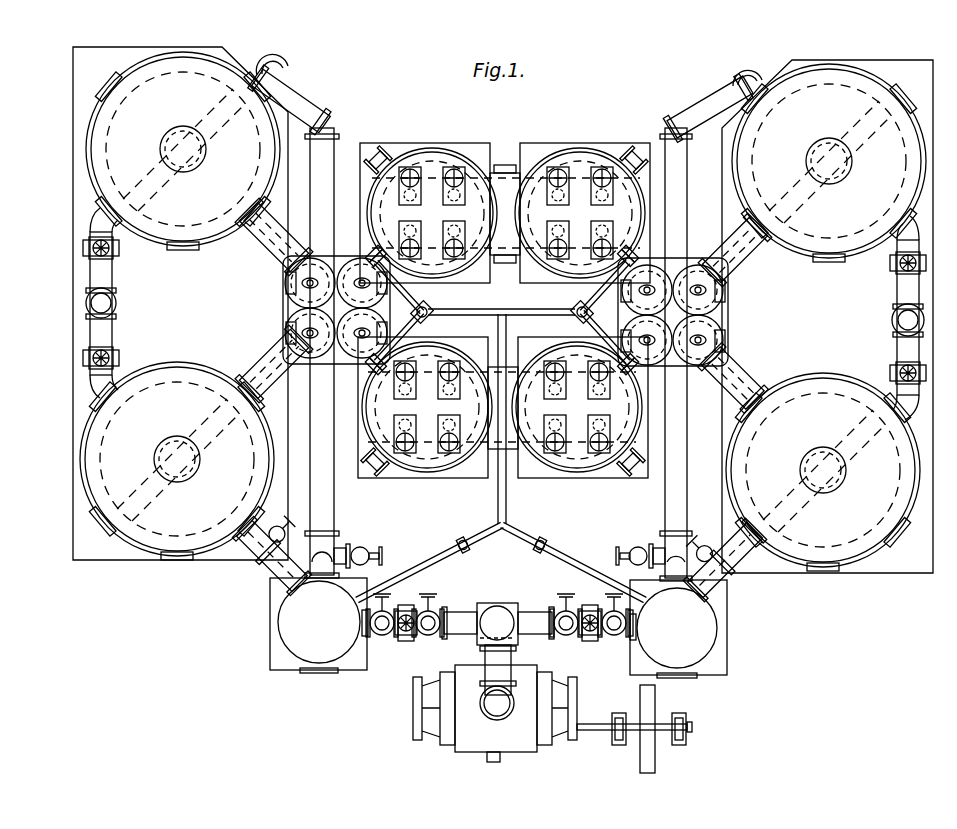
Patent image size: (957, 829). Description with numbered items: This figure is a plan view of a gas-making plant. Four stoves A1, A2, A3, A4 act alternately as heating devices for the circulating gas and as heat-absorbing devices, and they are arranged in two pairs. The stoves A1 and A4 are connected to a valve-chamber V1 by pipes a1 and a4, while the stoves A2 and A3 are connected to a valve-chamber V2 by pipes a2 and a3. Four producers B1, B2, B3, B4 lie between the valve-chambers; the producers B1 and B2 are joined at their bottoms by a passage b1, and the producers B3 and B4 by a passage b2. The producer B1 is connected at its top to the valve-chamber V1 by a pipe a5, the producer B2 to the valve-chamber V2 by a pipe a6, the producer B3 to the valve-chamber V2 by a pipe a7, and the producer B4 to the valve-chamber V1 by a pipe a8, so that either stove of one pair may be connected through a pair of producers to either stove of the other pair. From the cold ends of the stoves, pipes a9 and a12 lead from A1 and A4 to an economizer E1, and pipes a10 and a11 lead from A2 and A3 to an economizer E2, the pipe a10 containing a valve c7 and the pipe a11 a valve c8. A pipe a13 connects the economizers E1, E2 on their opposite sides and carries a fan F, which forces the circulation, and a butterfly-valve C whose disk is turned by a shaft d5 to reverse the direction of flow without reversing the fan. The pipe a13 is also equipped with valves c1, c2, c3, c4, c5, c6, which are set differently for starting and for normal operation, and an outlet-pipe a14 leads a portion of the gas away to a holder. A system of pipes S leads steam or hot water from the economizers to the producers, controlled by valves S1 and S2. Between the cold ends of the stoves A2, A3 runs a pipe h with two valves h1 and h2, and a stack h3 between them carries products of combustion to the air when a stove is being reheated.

The stove A1 is at (177, 461).
The stove A2 is at (823, 472).
The stove A3 is at (829, 163).
The stove A4 is at (183, 151).
The producer B1 is at (425, 407).
The producer B2 is at (580, 407).
The producer B3 is at (582, 213).
The producer B4 is at (428, 213).
The passage b1 is at (489, 408).
The passage b2 is at (505, 214).
The valve-chamber V1 is at (283, 302).
The valve-chamber V2 is at (728, 312).
The system of pipes S is at (490, 503).
The valve S1 is at (540, 540).
The branch pipe S2 is at (600, 311).
The pipe a1 is at (274, 364).
The pipe a2 is at (733, 378).
The pipe a3 is at (735, 250).
The pipe a4 is at (274, 237).
The pipe a5 is at (372, 368).
The pipe a6 is at (632, 368).
The pipe a7 is at (634, 253).
The pipe a8 is at (368, 253).
The pipe a9 is at (268, 578).
The pipe a10 is at (738, 577).
The pipe a11 is at (688, 200).
The pipe a12 is at (318, 196).
The pipe a13 is at (551, 608).
The outlet-pipe a14 is at (500, 762).
The economizer E1 is at (319, 625).
The economizer E2 is at (678, 629).
The butterfly-valve C is at (497, 610).
The valve c1 is at (386, 605).
The valve c2 is at (436, 606).
The valve c3 is at (572, 606).
The valve c4 is at (620, 606).
The valve c5 is at (406, 638).
The valve c6 is at (591, 638).
The valve c7 is at (718, 549).
The valve c8 is at (652, 540).
The shaft d5 is at (498, 682).
The fan F is at (495, 708).
The pipe h is at (897, 356).
The valve h1 is at (890, 375).
The valve h2 is at (890, 266).
The stack h3 is at (892, 320).